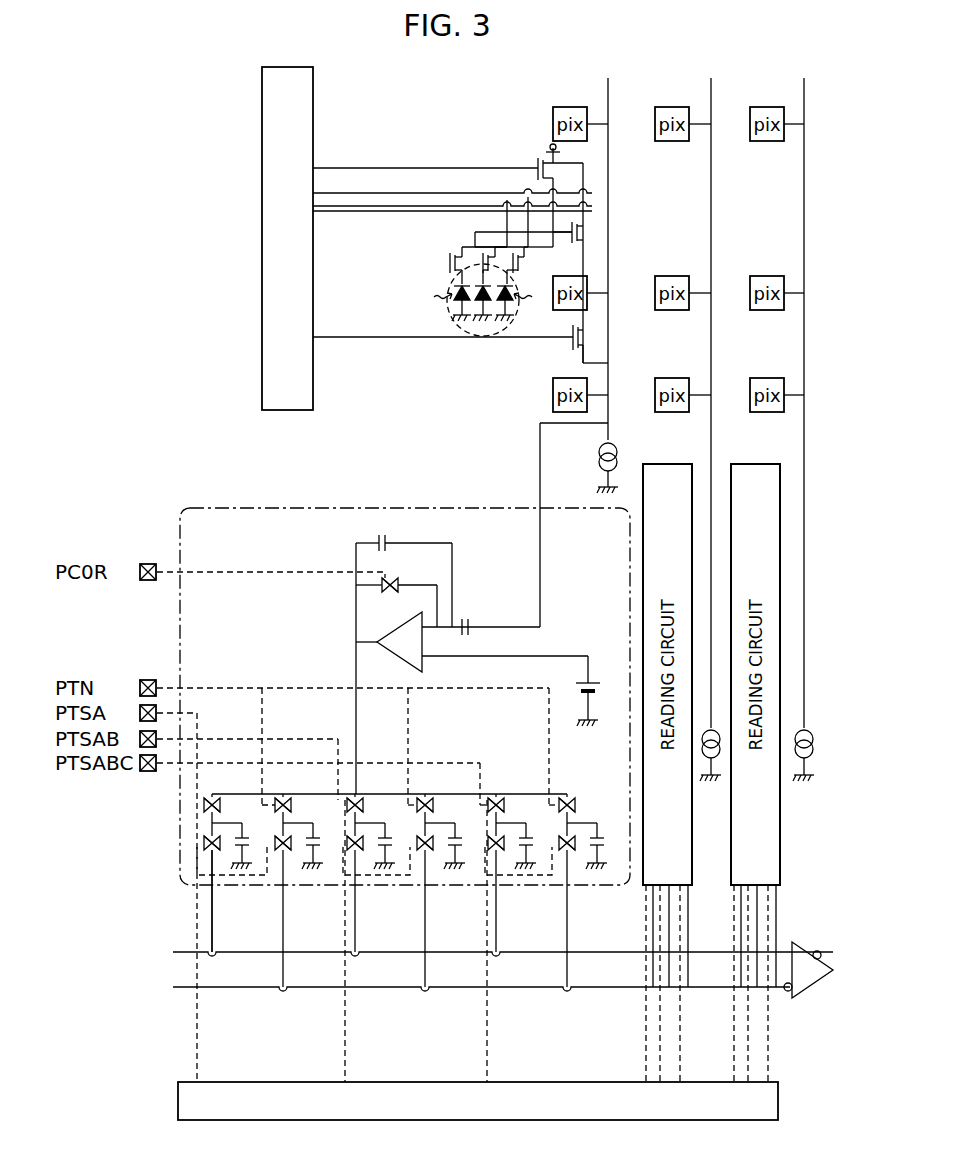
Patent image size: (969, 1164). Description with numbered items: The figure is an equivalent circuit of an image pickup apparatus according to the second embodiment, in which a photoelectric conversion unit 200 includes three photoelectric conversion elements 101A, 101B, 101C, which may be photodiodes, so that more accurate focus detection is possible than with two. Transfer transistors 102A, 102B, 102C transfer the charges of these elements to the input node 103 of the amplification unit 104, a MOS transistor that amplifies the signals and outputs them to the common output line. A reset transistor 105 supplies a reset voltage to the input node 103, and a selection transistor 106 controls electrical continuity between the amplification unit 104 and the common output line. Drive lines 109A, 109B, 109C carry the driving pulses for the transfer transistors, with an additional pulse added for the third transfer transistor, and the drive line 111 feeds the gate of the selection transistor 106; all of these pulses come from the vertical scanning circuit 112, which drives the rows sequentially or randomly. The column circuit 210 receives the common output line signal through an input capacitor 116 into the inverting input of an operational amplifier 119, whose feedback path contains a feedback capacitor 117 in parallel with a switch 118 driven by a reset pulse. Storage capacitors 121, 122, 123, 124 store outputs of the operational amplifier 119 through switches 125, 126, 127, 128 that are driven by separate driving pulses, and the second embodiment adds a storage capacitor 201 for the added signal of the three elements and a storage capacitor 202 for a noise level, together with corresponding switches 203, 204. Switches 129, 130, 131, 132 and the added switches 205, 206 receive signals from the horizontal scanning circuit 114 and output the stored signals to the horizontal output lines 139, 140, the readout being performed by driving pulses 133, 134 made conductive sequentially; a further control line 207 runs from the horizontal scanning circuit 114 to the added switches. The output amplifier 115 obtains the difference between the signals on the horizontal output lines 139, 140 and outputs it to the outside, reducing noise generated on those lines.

The vertical scanning circuit 112 is at (262, 200).
The drive line 109A is at (360, 212).
The drive line 109B is at (460, 207).
The drive line 109C is at (497, 193).
The transfer transistor 102A is at (450, 266).
The transfer transistor 102B is at (483, 253).
The transfer transistor 102C is at (518, 266).
The photoelectric conversion element 101A is at (456, 309).
The photoelectric conversion element 101B is at (480, 325).
The photoelectric conversion element 101C is at (508, 309).
The reset transistor 105 is at (556, 163).
The amplification unit 104 is at (577, 233).
The input node 103 is at (573, 238).
The selection transistor 106 is at (575, 336).
The drive line 111 is at (375, 340).
The photoelectric conversion unit 200 is at (490, 337).
The column circuit 210 is at (290, 508).
The feedback capacitor 117 is at (372, 542).
The switch 118 is at (398, 580).
The operational amplifier 119 is at (386, 635).
The input capacitor 116 is at (472, 620).
The storage capacitor 121 is at (220, 805).
The switch 126 is at (291, 805).
The switch 127 is at (363, 805).
The switch 128 is at (433, 805).
The switch 203 is at (502, 805).
The switch 204 is at (571, 805).
The storage capacitor 122 is at (313, 836).
The storage capacitor 123 is at (385, 836).
The storage capacitor 124 is at (455, 836).
The storage capacitor 201 is at (526, 836).
The storage capacitor 202 is at (597, 836).
The switch 125 is at (204, 843).
The switch 129 is at (215, 870).
The switch 130 is at (286, 870).
The switch 131 is at (358, 870).
The switch 132 is at (428, 870).
The switch 205 is at (499, 870).
The switch 206 is at (570, 870).
The horizontal output line 139 is at (173, 952).
The horizontal output line 140 is at (173, 987).
The driving pulse 133 is at (205, 1015).
The driving pulse 134 is at (352, 1038).
The control line 207 is at (493, 1038).
The horizontal scanning circuit 114 is at (778, 1100).
The output amplifier 115 is at (810, 942).